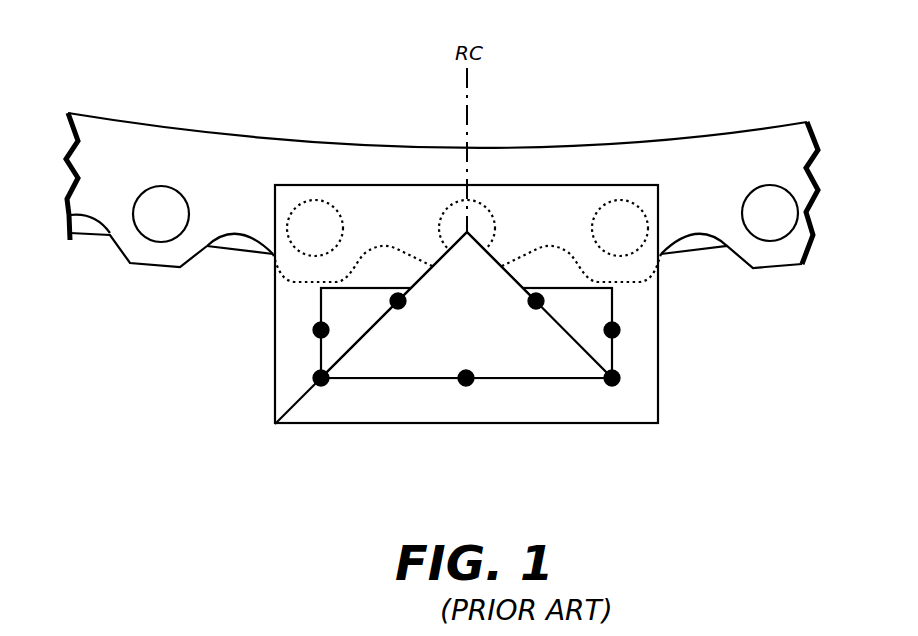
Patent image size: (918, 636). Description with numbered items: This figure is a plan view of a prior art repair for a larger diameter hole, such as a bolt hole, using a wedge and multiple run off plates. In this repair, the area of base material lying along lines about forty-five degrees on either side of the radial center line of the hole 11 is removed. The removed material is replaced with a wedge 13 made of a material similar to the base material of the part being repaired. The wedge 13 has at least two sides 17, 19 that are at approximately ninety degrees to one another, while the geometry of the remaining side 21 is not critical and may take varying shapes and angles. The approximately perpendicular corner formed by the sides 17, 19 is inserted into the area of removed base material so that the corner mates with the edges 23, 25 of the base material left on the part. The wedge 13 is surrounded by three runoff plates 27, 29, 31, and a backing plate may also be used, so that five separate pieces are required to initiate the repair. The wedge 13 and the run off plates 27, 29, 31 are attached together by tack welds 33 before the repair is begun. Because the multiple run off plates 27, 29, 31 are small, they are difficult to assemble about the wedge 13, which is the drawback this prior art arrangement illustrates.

The hole 11 is at (475, 207).
The wedge 13 is at (495, 362).
The side of wedge 17 is at (568, 332).
The side of wedge 19 is at (360, 350).
The remaining side of wedge 21 is at (567, 380).
The edge of base material 23 is at (495, 257).
The edge of base material 25 is at (436, 261).
The runoff plate 27 is at (600, 348).
The runoff plate 29 is at (335, 301).
The runoff plate 31 is at (410, 403).
The tack welds 33 is at (321, 329).